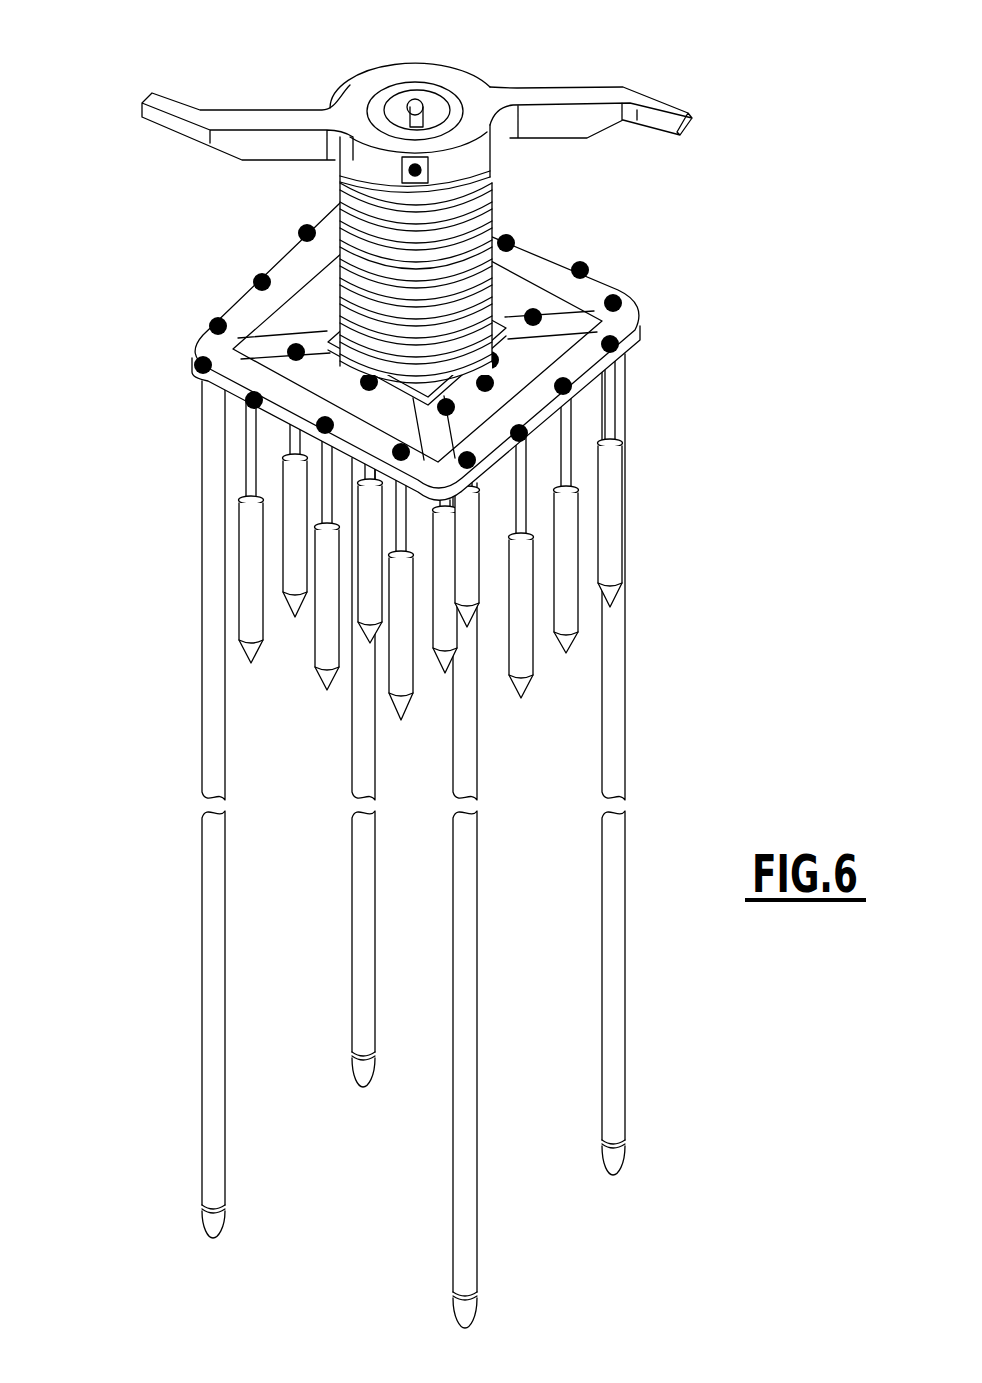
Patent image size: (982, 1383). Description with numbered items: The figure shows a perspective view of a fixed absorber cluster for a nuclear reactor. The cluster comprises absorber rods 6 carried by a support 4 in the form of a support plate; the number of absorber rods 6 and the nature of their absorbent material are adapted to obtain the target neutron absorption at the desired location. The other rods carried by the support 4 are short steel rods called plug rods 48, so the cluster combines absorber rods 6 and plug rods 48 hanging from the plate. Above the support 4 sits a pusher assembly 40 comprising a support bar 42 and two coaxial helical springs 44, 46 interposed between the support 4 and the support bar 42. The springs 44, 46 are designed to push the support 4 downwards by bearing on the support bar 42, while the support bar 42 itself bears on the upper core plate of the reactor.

The pusher assembly 40 is at (156, 211).
The support bar 42 is at (568, 98).
The helical spring 44 is at (415, 275).
The helical spring 46 is at (492, 178).
The support 4 is at (605, 288).
The plug rods 48 is at (613, 543).
The absorber rods 6 is at (212, 985).